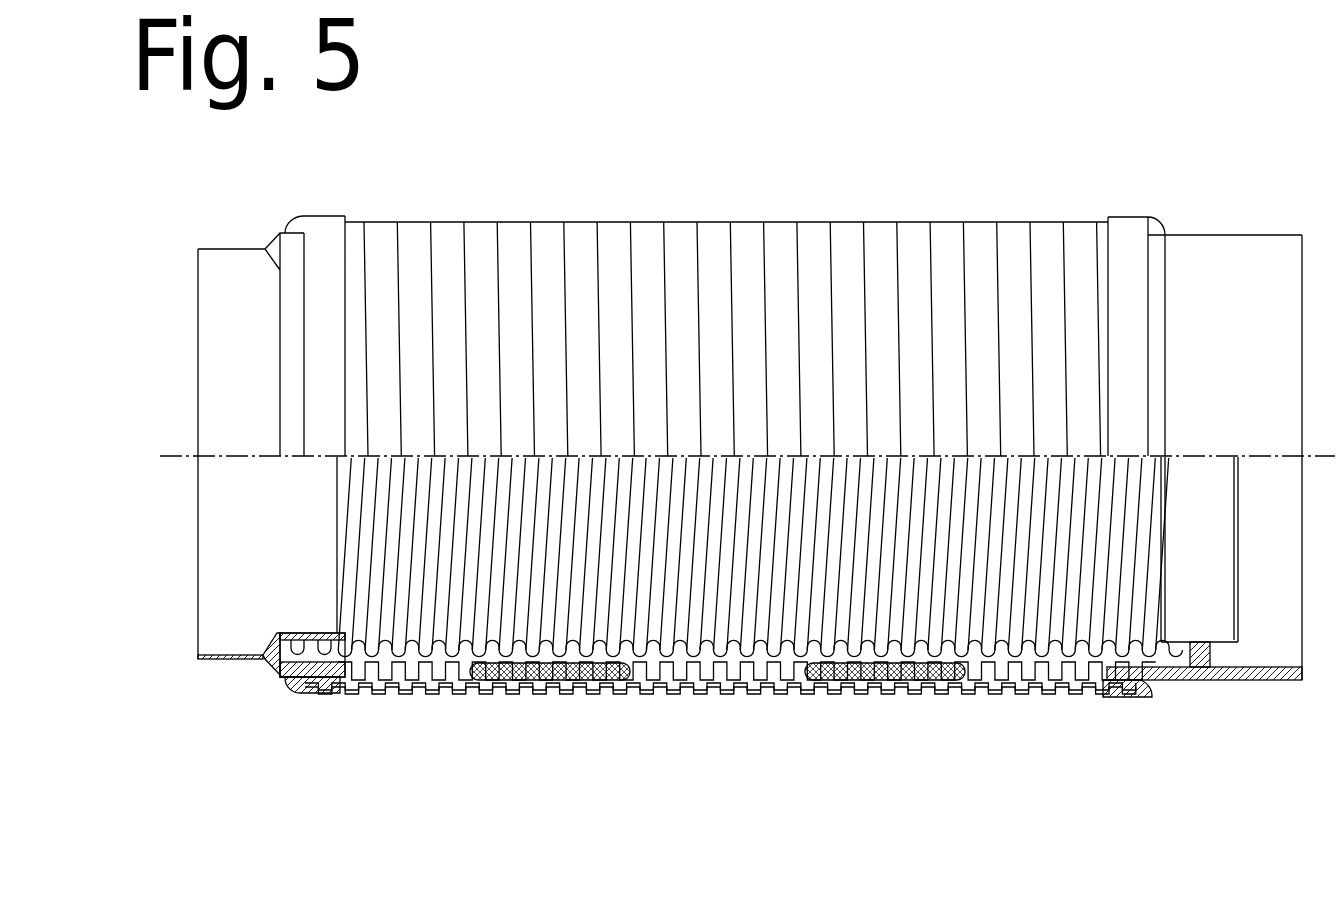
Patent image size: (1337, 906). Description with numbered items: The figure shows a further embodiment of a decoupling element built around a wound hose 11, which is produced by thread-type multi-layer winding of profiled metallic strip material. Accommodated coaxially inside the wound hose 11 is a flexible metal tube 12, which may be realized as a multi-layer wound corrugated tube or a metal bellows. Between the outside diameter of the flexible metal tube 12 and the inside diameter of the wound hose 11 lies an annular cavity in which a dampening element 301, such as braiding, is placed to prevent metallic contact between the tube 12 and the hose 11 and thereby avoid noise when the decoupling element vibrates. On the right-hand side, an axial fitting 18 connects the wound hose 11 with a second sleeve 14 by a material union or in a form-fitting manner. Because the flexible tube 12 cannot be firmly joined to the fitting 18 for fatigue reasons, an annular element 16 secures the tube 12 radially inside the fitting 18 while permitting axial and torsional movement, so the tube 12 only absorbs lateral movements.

The wound hose 11 is at (474, 682).
The flexible metal tube 12 is at (399, 657).
The second sleeve 14 is at (1123, 690).
The annular element 16 is at (1197, 680).
The axial fitting 18 is at (1272, 680).
The dampening element 301 is at (553, 668).